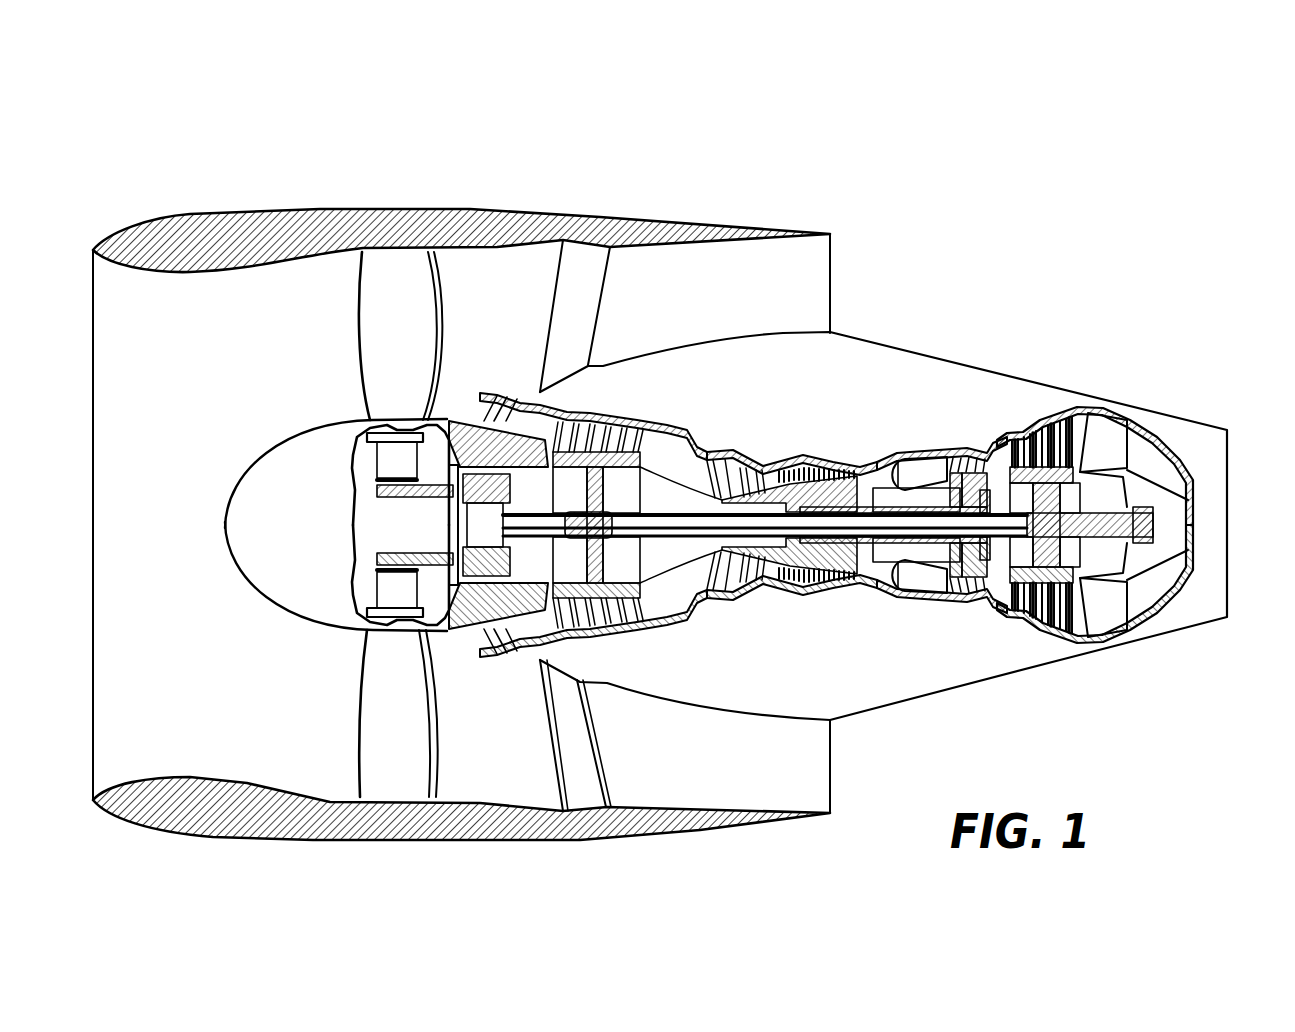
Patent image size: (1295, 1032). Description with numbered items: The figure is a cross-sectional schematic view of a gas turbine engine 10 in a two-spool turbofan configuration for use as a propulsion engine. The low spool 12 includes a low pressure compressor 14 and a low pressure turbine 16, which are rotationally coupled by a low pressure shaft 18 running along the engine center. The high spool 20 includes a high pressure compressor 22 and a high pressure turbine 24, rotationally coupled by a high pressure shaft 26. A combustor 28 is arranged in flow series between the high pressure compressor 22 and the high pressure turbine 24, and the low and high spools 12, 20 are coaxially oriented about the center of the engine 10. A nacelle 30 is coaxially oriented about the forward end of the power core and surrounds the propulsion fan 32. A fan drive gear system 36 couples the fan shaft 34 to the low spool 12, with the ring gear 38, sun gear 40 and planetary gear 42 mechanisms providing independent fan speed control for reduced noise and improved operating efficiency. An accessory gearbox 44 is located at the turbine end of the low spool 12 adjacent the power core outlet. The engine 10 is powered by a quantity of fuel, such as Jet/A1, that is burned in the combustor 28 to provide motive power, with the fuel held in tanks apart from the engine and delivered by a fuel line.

The gas turbine engine 10 is at (684, 188).
The low spool 12 is at (691, 545).
The low pressure compressor 14 is at (619, 420).
The low pressure turbine 16 is at (1045, 407).
The low pressure shaft 18 is at (655, 540).
The high spool 20 is at (937, 550).
The high pressure compressor 22 is at (848, 458).
The high pressure turbine 24 is at (972, 447).
The high pressure shaft 26 is at (888, 560).
The combustor 28 is at (920, 447).
The nacelle 30 is at (473, 205).
The propulsion fan 32 is at (352, 385).
The fan shaft 34 is at (427, 600).
The fan drive gear system 36 is at (460, 520).
The ring gear 38 is at (441, 633).
The sun gear 40 is at (478, 655).
The planetary gear 42 is at (513, 660).
The accessory gearbox 44 is at (1140, 530).